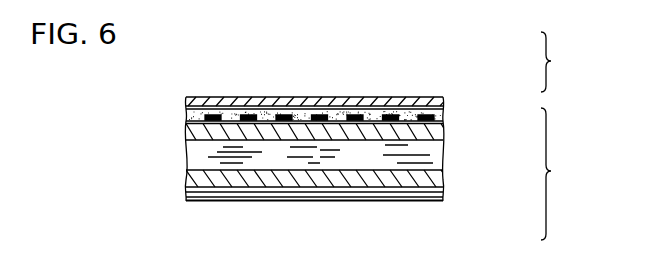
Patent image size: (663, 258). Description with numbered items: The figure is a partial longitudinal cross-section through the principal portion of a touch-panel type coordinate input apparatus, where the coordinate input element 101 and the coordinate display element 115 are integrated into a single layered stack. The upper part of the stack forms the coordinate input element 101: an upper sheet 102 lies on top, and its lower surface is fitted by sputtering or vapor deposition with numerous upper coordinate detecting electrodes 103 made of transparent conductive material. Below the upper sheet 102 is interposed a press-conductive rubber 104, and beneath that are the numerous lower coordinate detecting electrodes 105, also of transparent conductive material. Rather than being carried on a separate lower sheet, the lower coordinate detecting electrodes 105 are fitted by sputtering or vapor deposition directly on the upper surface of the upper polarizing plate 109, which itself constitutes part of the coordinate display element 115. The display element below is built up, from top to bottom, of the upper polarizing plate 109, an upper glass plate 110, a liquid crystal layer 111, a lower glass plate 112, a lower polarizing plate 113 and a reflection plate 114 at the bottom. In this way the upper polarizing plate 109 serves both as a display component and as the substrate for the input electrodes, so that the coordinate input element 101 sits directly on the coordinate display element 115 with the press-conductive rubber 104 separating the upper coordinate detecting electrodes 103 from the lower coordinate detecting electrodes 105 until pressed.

The coordinate input element 101 is at (387, 76).
The upper sheet 102 is at (397, 97).
The upper coordinate detecting electrode 103 is at (443, 108).
The press-conductive rubber 104 is at (187, 115).
The lower coordinate detecting electrode 105 is at (316, 114).
The upper polarizing plate 109 is at (443, 127).
The upper glass plate 110 is at (443, 133).
The liquid crystal layer 111 is at (443, 160).
The lower glass plate 112 is at (443, 178).
The lower polarizing plate 113 is at (443, 189).
The reflection plate 114 is at (385, 202).
The coordinate display element 115 is at (386, 174).